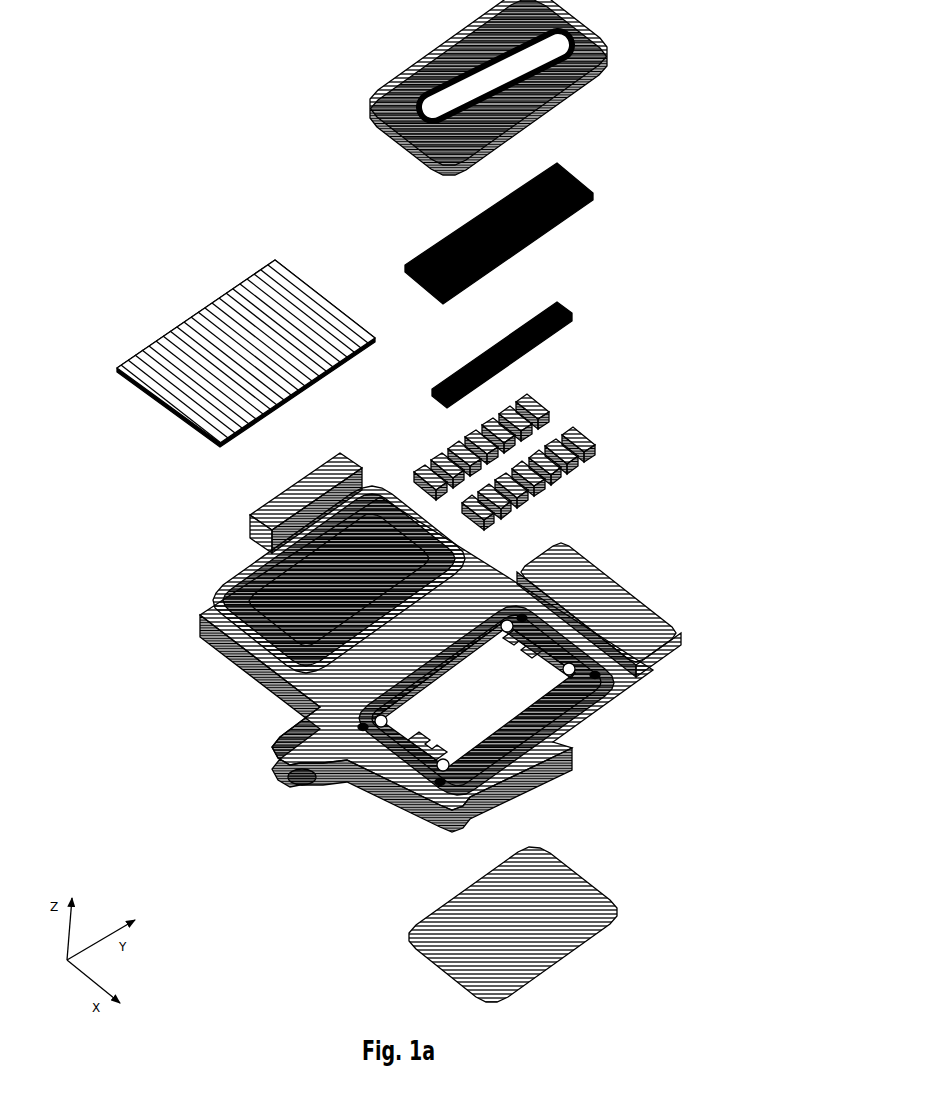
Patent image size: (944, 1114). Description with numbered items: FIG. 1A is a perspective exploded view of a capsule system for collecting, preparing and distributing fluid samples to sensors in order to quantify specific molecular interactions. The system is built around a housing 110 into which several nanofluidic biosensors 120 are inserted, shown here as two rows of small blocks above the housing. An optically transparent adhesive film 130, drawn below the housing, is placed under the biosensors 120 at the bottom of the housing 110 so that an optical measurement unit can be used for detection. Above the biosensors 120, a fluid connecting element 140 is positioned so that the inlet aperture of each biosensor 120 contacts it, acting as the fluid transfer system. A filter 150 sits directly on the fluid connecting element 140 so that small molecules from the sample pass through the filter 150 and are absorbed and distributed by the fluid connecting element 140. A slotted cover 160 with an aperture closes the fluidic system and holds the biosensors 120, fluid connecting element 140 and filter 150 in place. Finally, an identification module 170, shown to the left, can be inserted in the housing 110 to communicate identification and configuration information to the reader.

The housing 110 is at (628, 575).
The nanofluidic biosensors 120 is at (600, 448).
The optically transparent adhesive film 130 is at (597, 877).
The fluid connecting element 140 is at (573, 315).
The filter 150 is at (597, 195).
The cover 160 is at (623, 60).
The identification module 170 is at (185, 318).